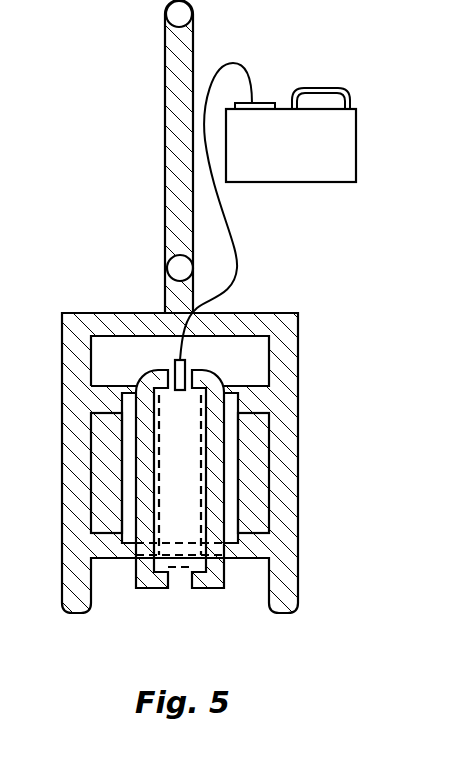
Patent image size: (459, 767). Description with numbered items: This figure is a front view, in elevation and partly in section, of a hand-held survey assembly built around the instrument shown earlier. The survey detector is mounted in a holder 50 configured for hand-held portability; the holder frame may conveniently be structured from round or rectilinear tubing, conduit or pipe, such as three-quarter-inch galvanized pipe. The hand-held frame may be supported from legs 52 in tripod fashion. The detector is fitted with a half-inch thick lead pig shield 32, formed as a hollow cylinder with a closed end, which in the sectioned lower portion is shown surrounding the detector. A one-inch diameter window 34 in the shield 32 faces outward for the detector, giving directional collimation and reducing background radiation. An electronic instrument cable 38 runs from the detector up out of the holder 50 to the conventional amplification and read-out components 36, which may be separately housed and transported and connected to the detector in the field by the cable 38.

The holder 50 is at (138, 182).
The legs 52 is at (298, 588).
The lead pig shield 32 is at (205, 470).
The window 34 is at (178, 578).
The electronic instrument cable 38 is at (238, 265).
The electronic and read out components 36 is at (343, 149).